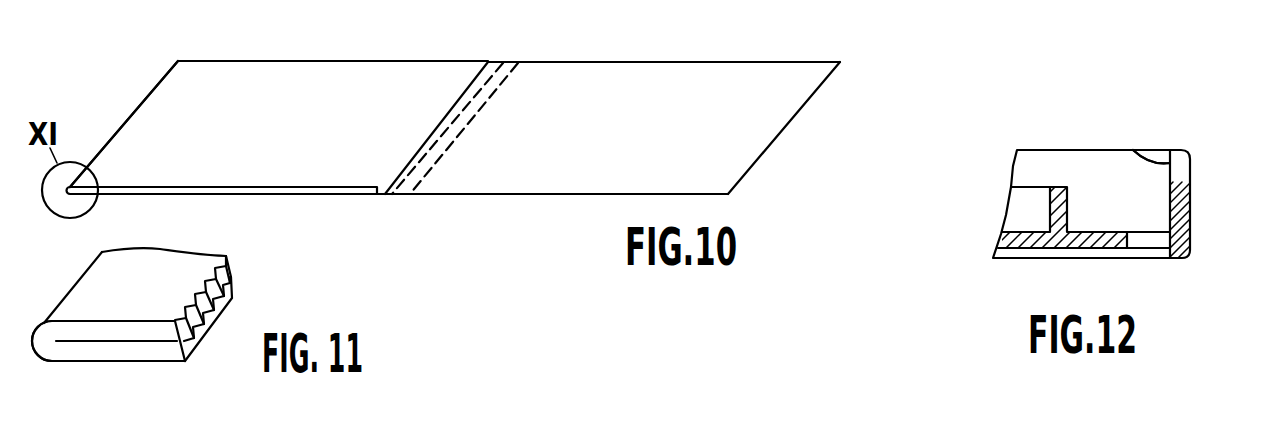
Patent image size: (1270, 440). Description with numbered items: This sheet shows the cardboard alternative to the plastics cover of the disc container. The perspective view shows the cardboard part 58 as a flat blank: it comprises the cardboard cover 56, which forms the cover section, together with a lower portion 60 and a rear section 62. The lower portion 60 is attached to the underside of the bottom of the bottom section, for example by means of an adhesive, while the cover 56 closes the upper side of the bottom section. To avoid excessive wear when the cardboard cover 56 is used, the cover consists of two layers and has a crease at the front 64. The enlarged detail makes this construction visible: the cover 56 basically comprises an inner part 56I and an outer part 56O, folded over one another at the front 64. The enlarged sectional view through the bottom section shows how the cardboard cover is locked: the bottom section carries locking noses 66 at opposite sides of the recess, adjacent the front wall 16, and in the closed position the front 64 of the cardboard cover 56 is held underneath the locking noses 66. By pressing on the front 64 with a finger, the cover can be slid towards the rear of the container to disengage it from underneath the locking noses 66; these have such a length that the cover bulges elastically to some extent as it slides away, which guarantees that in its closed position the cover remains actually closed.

In FIG. 12, the front wall 16 is at (1182, 211).
In FIG. 10, the cardboard cover 56 is at (283, 77).
In FIG. 11, the outer part 56O is at (94, 360).
In FIG. 11, the inner part 56I is at (147, 330).
In FIG. 10, the cardboard part 58 is at (559, 62).
In FIG. 10, the lower portion 60 is at (717, 80).
In FIG. 10, the rear section 62 is at (505, 73).
In FIG. 10, the front 64 is at (145, 103).
In FIG. 11, the front 64 is at (66, 292).
In FIG. 12, the locking noses 66 is at (1159, 155).